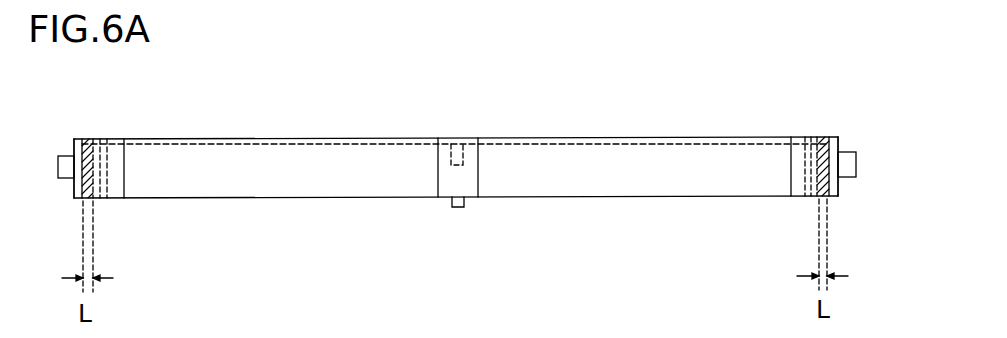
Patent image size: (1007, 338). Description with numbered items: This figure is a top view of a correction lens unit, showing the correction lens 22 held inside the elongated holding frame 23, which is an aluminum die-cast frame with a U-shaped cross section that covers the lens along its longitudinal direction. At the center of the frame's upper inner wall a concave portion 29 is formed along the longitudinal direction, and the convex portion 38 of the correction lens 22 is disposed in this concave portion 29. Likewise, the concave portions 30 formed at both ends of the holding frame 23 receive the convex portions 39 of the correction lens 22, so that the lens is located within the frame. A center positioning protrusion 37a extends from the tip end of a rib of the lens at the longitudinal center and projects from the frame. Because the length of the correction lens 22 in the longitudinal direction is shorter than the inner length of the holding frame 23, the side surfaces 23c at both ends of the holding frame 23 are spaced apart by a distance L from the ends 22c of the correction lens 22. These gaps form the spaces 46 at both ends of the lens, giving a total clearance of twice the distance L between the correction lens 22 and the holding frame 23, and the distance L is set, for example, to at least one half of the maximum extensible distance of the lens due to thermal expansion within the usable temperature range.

The holding frame 23 is at (407, 137).
The correction lens 22 is at (700, 140).
The concave portion 29 is at (444, 200).
The convex portion 38 is at (468, 136).
The center positioning protrusion 37a is at (462, 208).
The concave portion 30 is at (113, 197).
The convex portion 39 is at (110, 165).
The space 46 is at (79, 150).
The side surface 23c is at (80, 193).
The end of correction lens 22c is at (101, 185).